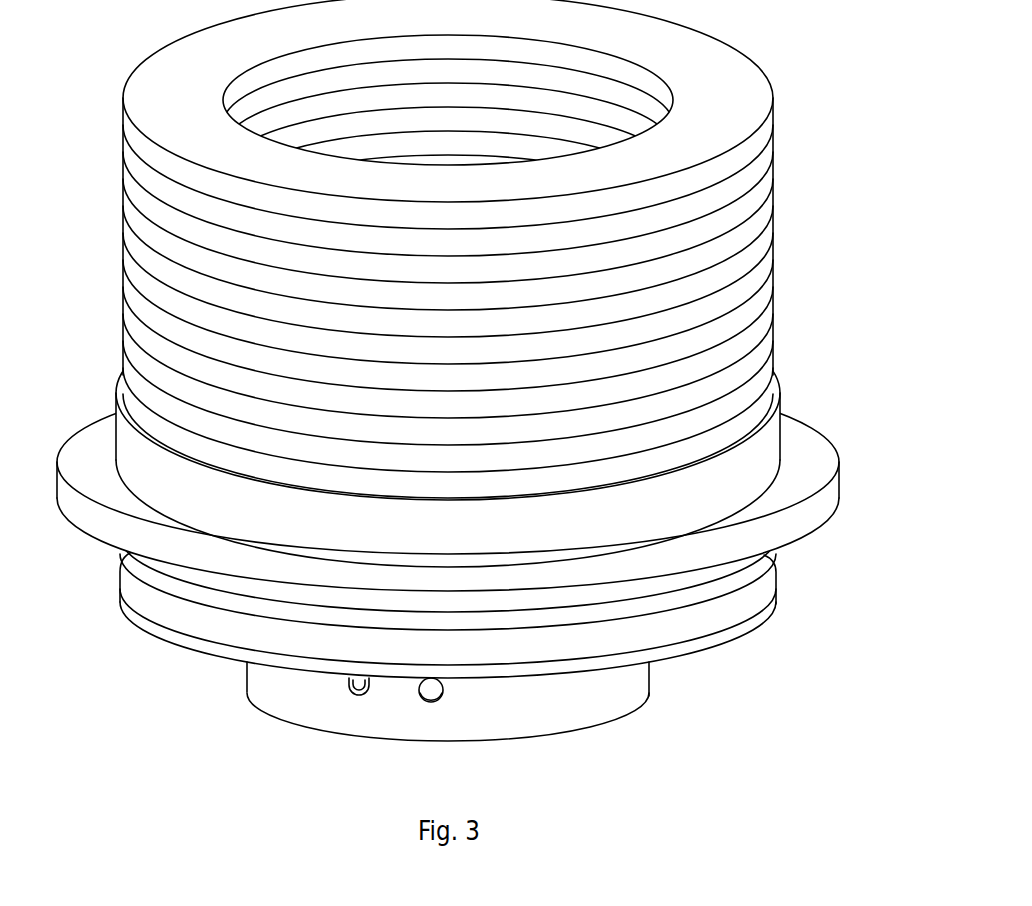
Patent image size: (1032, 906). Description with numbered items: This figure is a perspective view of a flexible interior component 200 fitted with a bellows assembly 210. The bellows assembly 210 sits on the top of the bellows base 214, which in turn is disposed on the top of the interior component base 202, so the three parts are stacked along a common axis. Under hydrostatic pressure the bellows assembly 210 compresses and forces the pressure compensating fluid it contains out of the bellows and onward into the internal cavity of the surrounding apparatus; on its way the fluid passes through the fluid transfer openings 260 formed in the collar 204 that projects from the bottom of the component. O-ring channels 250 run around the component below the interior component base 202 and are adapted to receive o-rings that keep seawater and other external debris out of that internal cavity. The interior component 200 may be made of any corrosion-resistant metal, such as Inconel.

The flexible interior component 200 is at (509, 397).
The interior component base 202 is at (830, 517).
The collar 204 is at (583, 712).
The bellows assembly 210 is at (777, 302).
The bellows base 214 is at (782, 445).
The o-ring channels 250 is at (760, 571).
The fluid transfer openings 260 is at (388, 702).